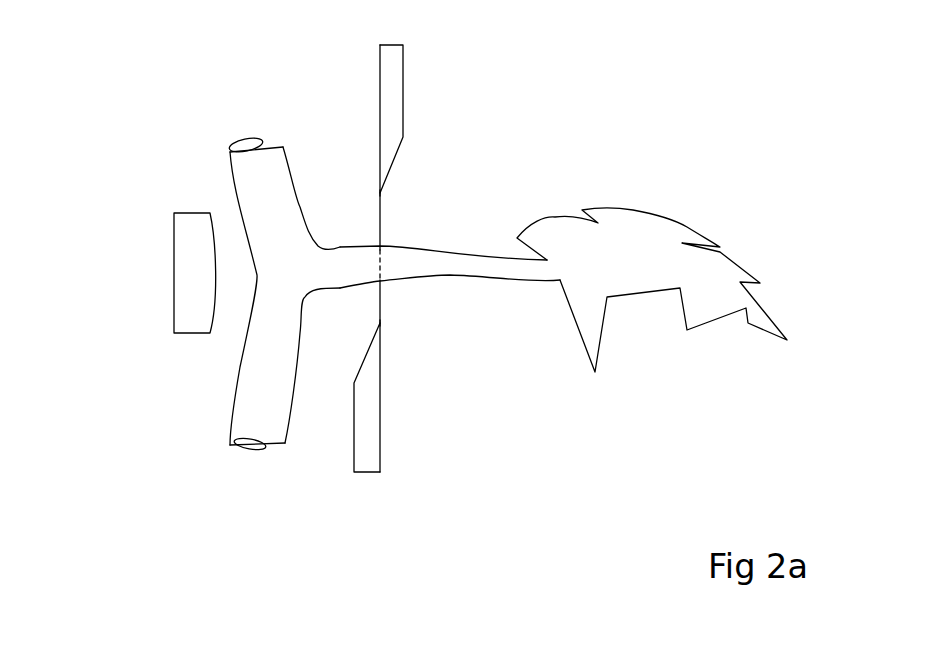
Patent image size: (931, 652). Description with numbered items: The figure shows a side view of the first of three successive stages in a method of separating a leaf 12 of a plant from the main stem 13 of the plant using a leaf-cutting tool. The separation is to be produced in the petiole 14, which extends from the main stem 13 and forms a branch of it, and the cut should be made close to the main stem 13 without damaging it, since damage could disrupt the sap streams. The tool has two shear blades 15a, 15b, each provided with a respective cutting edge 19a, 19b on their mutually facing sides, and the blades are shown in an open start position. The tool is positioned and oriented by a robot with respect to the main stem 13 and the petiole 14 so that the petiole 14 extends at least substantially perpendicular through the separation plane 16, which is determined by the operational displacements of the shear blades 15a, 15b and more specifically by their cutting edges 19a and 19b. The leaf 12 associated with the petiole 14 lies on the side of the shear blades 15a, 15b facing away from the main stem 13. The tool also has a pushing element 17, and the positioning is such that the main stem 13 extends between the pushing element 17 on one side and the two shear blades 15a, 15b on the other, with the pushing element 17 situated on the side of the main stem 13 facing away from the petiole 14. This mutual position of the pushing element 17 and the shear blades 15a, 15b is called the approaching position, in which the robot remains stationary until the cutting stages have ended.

The leaf 12 is at (643, 237).
The main stem 13 is at (262, 368).
The petiole 14 is at (447, 270).
The shear blade 15a is at (395, 100).
The shear blade 15b is at (368, 423).
The separation plane 16 is at (377, 223).
The pushing element 17 is at (185, 272).
The cutting edge 19a is at (380, 193).
The cutting edge 19b is at (380, 323).